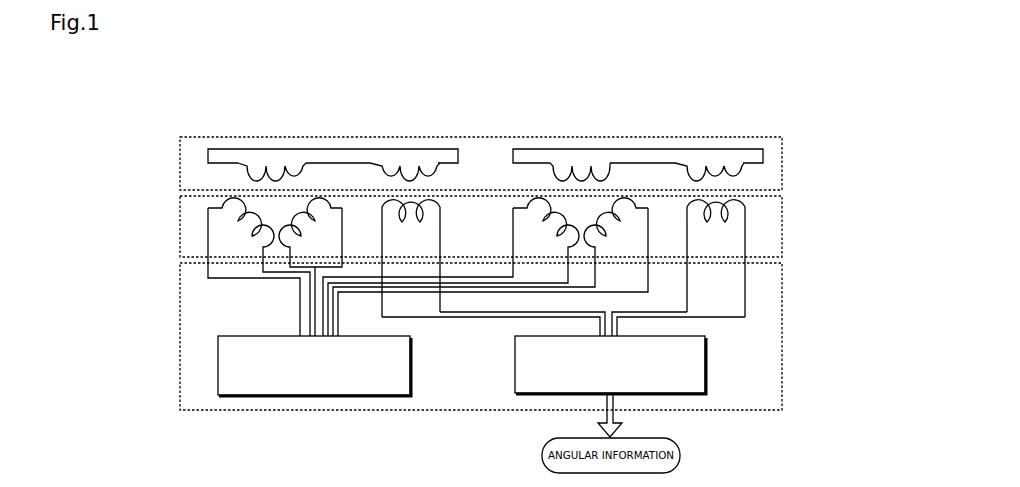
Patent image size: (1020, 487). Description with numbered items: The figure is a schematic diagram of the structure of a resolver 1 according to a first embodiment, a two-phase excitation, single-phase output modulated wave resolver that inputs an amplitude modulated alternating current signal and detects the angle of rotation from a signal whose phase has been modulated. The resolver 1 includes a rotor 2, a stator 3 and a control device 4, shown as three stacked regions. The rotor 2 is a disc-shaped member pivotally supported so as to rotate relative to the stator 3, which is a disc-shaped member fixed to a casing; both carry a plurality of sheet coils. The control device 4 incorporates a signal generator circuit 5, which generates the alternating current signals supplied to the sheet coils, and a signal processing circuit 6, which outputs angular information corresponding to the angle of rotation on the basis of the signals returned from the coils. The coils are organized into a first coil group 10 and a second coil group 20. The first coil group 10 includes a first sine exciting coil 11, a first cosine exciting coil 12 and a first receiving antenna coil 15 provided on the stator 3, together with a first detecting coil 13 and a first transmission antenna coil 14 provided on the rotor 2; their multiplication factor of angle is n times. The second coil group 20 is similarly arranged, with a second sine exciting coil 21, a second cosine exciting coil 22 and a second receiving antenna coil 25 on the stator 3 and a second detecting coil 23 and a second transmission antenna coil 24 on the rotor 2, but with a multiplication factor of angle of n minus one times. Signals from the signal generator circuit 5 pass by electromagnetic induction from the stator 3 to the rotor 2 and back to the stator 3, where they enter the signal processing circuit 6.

The resolver 1 is at (521, 243).
The rotor 2 is at (783, 152).
The stator 3 is at (783, 210).
The control device 4 is at (783, 310).
The signal generator circuit 5 is at (412, 363).
The signal processing circuit 6 is at (707, 363).
The first coil group 10 is at (268, 118).
The first sine exciting coil 11 is at (224, 204).
The first cosine exciting coil 12 is at (327, 202).
The first detecting coil 13 is at (243, 165).
The first transmission antenna coil 14 is at (372, 163).
The first receiving antenna coil 15 is at (438, 204).
The second coil group 20 is at (572, 120).
The second sine exciting coil 21 is at (530, 203).
The second cosine exciting coil 22 is at (631, 202).
The second detecting coil 23 is at (546, 165).
The second transmission antenna coil 24 is at (683, 163).
The second receiving antenna coil 25 is at (743, 204).